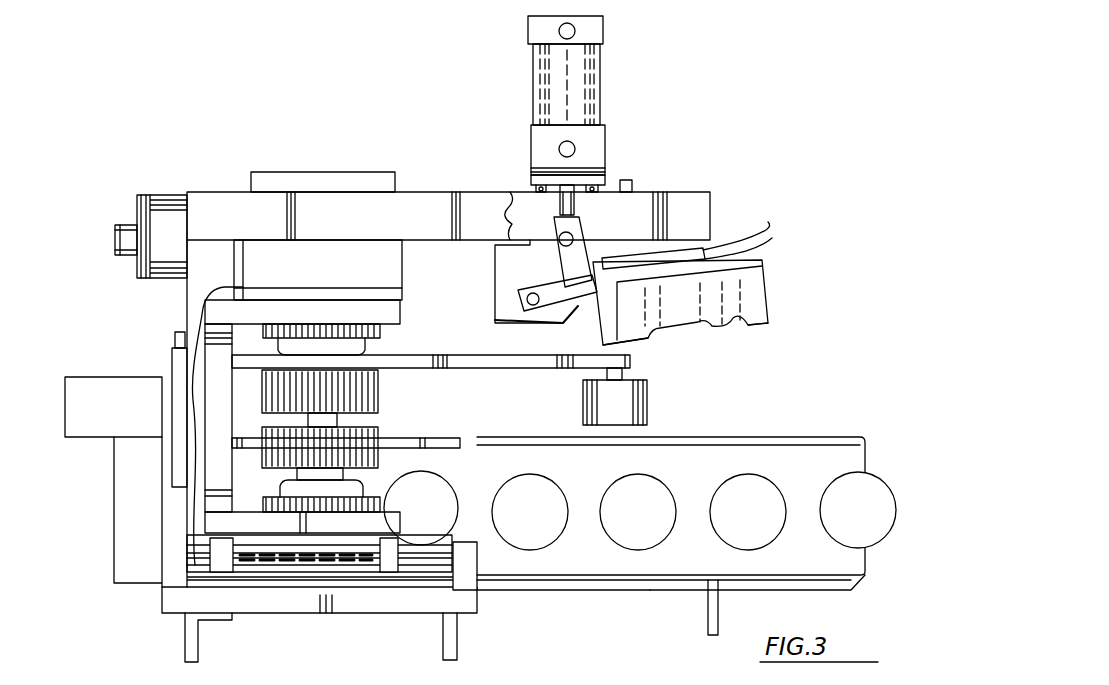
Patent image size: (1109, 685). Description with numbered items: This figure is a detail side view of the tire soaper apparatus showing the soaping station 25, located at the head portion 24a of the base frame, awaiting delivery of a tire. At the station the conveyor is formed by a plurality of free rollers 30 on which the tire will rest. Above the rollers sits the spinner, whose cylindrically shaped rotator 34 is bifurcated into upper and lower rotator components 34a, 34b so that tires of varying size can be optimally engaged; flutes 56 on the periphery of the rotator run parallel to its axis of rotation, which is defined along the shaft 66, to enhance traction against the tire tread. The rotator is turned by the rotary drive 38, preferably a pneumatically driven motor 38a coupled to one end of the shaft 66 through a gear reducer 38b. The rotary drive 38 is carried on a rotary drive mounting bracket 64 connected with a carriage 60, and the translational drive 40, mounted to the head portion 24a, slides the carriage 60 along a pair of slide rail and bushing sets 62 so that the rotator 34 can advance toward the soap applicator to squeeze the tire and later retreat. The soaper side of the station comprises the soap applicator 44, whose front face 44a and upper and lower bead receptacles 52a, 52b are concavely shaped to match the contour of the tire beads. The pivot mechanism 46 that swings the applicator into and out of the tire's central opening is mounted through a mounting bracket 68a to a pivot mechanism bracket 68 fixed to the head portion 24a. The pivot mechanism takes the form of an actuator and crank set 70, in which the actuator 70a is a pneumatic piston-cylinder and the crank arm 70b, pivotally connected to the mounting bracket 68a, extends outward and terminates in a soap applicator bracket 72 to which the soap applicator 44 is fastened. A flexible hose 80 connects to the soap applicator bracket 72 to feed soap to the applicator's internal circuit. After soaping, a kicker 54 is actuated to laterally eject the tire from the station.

The head portion 24a is at (574, 596).
The soaping station 25 is at (140, 297).
The free rollers 30 is at (615, 481).
The rotator 34 is at (380, 428).
The upper rotator component 34a is at (380, 393).
The lower rotator component 34b is at (402, 468).
The rotary drive 38 is at (396, 171).
The pneumatically driven motor 38a is at (165, 190).
The gear reducer 38b is at (403, 272).
The translational drive 40 is at (328, 594).
The soap applicator 44 is at (770, 290).
The front face 44a is at (766, 328).
The pivot mechanism 46 is at (633, 130).
The upper bead receptacle 52a is at (690, 326).
The lower bead receptacle 52b is at (735, 327).
The kicker 54 is at (650, 401).
The flutes 56 is at (370, 368).
The carriage 60 is at (393, 516).
The slide rail and bushing sets 62 is at (270, 566).
The rotary drive mounting bracket 64 is at (207, 445).
The shaft 66 is at (306, 358).
The pivot mechanism bracket 68 is at (172, 408).
The mounting bracket 68a is at (531, 178).
The actuator and crank set 70 is at (510, 273).
The actuator 70a is at (600, 192).
The crank arm 70b is at (496, 320).
The soap applicator bracket 72 is at (703, 255).
The flexible hose 80 is at (788, 233).